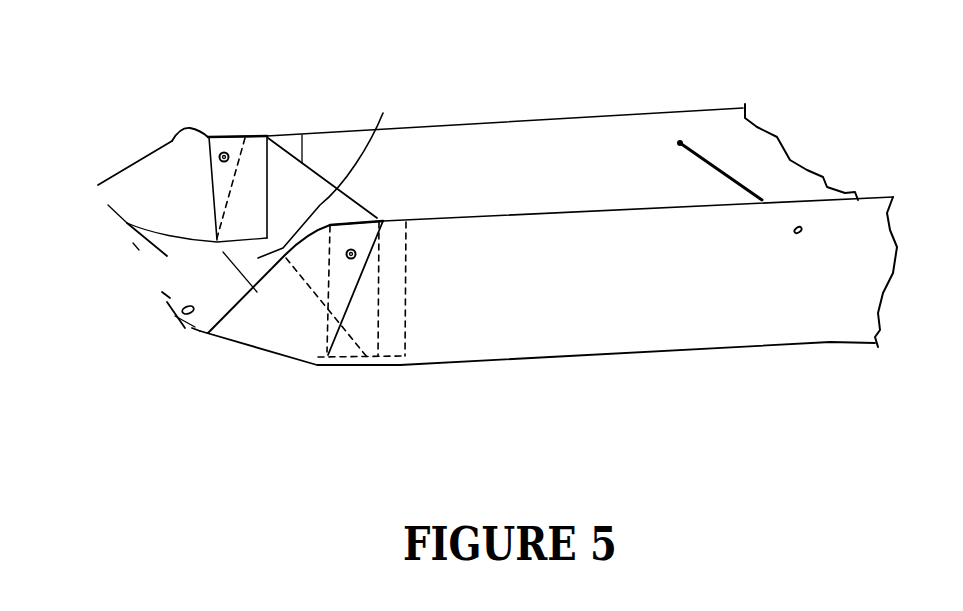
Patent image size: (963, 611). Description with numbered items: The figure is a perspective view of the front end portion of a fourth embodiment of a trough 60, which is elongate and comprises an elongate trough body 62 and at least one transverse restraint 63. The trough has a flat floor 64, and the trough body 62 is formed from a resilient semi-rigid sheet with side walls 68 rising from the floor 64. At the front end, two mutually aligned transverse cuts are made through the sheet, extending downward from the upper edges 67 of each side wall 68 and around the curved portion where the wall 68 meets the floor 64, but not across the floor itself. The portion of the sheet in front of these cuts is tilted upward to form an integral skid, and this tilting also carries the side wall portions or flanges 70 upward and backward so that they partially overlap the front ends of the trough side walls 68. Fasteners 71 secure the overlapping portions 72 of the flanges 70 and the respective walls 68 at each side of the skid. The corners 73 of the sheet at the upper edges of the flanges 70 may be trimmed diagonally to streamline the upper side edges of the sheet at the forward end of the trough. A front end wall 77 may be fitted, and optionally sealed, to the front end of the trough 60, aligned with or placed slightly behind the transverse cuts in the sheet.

The trough 60 is at (590, 380).
The trough body 62 is at (745, 350).
The transverse restraint 63 is at (702, 154).
The floor 64 is at (383, 113).
The upper edges 67 is at (255, 135).
The side wall 68 is at (533, 180).
The flanges 70 is at (195, 145).
The fasteners 71 is at (223, 150).
The overlapping portions 72 is at (214, 188).
The corners 73 is at (172, 141).
The front end wall 77 is at (320, 180).